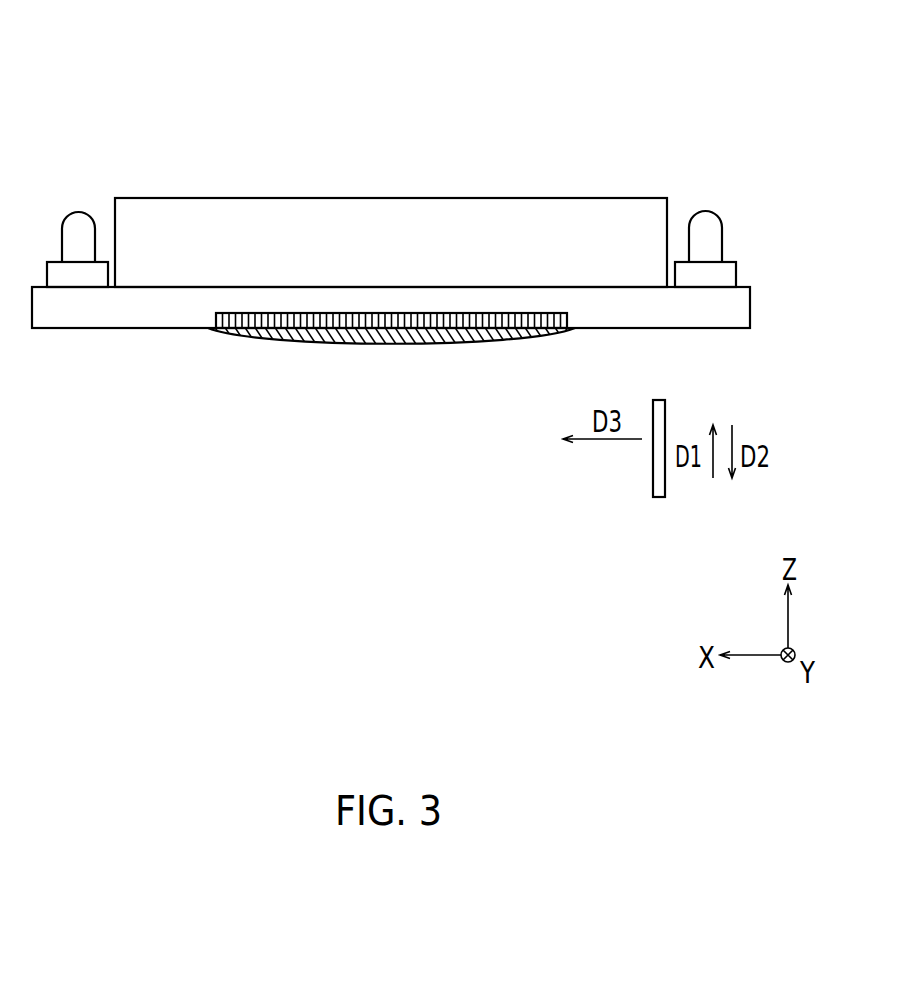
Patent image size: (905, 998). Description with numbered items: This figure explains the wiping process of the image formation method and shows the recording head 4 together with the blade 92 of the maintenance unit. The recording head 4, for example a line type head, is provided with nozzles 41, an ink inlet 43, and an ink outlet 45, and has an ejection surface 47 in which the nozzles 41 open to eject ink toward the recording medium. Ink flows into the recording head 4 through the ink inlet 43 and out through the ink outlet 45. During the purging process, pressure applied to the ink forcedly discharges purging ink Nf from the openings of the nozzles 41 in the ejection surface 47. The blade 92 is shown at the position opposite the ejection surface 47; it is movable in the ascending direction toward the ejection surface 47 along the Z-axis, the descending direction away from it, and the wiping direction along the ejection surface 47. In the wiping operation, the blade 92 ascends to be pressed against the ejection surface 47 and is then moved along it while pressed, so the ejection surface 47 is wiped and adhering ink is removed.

The recording head 4 is at (165, 118).
The nozzles 41 is at (307, 313).
The ink inlet 43 is at (68, 215).
The ink outlet 45 is at (717, 213).
The ejection surface 47 is at (713, 329).
The blade 92 is at (653, 460).
The purging ink Nf is at (338, 343).